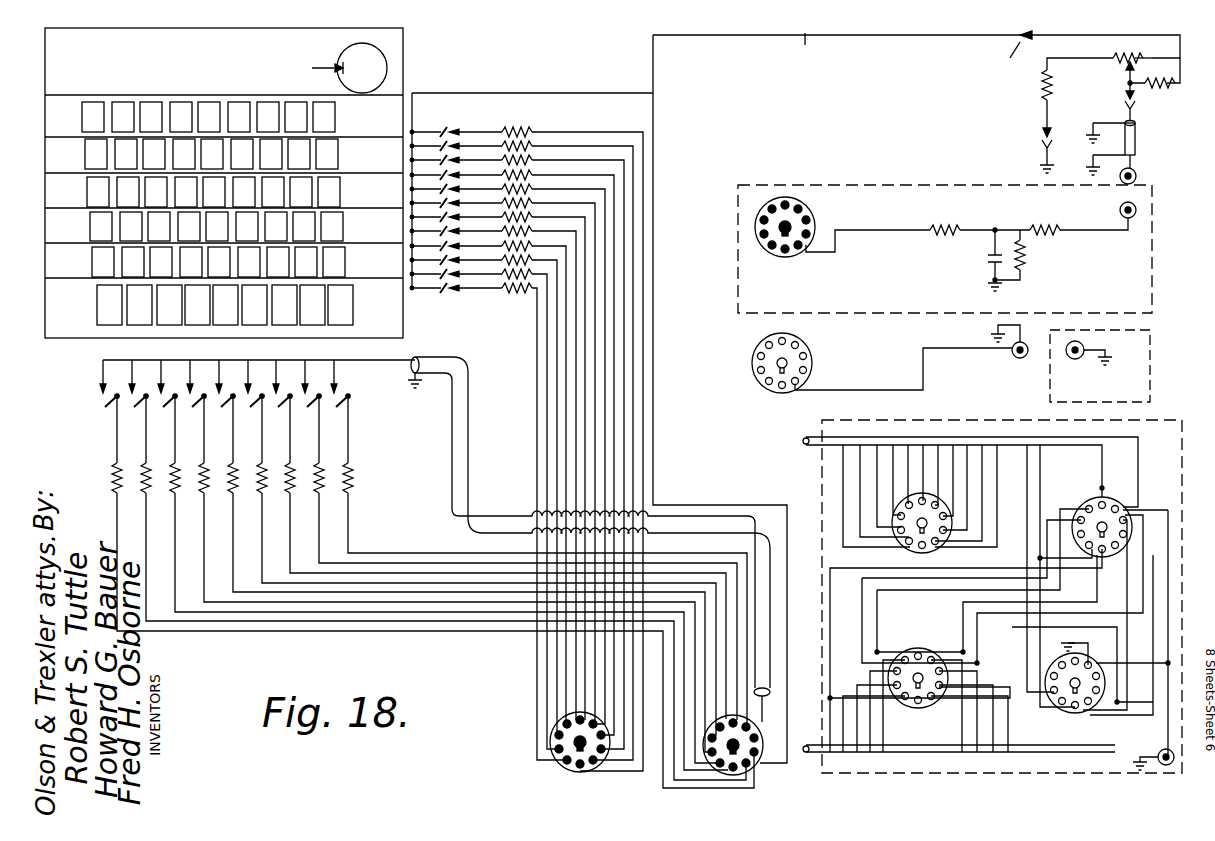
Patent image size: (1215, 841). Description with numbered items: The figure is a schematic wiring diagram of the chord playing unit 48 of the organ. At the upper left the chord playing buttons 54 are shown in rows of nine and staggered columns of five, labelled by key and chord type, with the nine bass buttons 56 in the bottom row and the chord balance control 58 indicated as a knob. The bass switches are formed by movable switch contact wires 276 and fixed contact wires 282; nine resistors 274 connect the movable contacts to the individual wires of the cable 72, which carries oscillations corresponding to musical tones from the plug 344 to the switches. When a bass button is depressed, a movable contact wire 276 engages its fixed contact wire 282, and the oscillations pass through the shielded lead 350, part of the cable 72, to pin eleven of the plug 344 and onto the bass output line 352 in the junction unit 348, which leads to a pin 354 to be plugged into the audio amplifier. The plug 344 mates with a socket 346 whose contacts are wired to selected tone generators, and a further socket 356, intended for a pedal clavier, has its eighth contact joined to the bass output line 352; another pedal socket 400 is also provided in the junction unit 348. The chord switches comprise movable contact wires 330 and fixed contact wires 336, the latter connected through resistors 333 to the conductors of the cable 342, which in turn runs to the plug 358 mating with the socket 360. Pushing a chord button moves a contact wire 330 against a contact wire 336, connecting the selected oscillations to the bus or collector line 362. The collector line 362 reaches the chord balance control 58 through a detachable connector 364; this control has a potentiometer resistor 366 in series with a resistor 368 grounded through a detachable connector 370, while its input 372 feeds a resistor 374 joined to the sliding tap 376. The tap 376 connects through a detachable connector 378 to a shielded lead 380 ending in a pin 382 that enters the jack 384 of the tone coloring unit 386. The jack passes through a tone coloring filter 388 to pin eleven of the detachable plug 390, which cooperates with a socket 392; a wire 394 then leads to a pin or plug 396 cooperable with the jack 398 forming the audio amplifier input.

The chord playing unit 48 is at (404, 38).
The chord playing buttons 54 is at (183, 110).
The bass buttons 56 is at (140, 310).
The chord balance control 58 is at (392, 64).
The fixed contact wires 282 is at (338, 378).
The movable switch contact wires 276 is at (344, 406).
The resistors 274 is at (350, 474).
The shielded lead 350 is at (452, 478).
The movable contact wires 330 is at (440, 140).
The fixed contact wires 336 is at (458, 144).
The resistors 333 is at (535, 147).
The cable 342 is at (652, 468).
The cable 72 is at (434, 633).
The plug 358 is at (575, 770).
The plug 344 is at (750, 765).
The bus or collector line 362 is at (796, 398).
The detachable connector 364 is at (1000, 52).
The potentiometer resistor 366 is at (1116, 56).
The input 372 is at (1151, 48).
The sliding tap 376 is at (1140, 78).
The resistor 374 is at (1166, 94).
The detachable connector 378 is at (1125, 104).
The shielded lead 380 is at (1137, 152).
The pin 382 is at (1136, 176).
The resistor 368 is at (1043, 90).
The detachable connector 370 is at (1035, 140).
The tone coloring unit 386 is at (945, 249).
The detachable plug 390 is at (805, 204).
The tone coloring filter 388 is at (1022, 228).
The jack 384 is at (1137, 210).
The socket 392 is at (812, 355).
The wire 394 is at (870, 389).
The pin or plug 396 is at (1013, 357).
The jack 398 is at (1075, 342).
The junction unit 348 is at (960, 780).
The socket 346 is at (1120, 500).
The bass output line 352 is at (1127, 510).
The socket 360 is at (915, 550).
The socket 400 is at (918, 708).
The socket 356 is at (1072, 713).
The pin 354 is at (1160, 750).